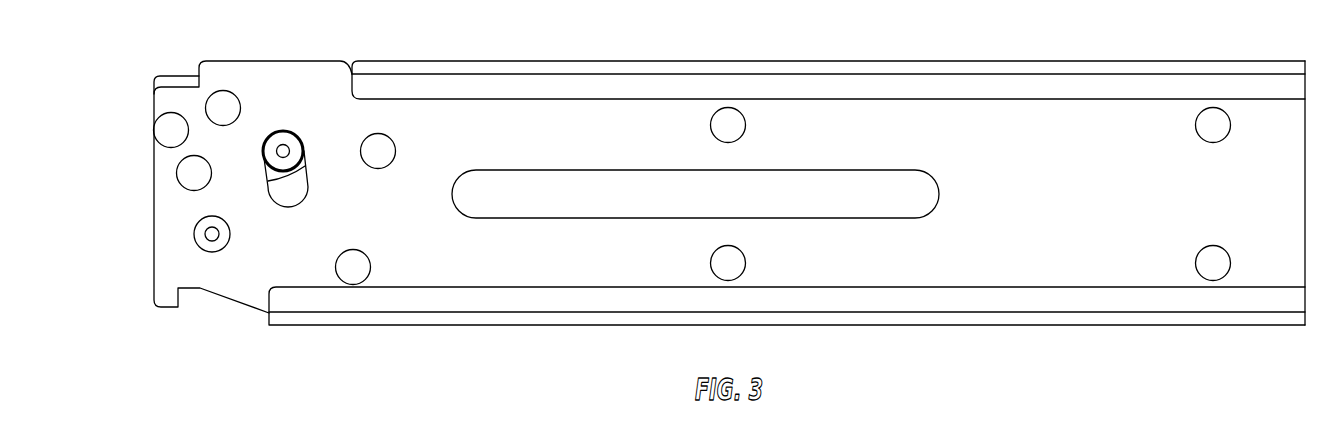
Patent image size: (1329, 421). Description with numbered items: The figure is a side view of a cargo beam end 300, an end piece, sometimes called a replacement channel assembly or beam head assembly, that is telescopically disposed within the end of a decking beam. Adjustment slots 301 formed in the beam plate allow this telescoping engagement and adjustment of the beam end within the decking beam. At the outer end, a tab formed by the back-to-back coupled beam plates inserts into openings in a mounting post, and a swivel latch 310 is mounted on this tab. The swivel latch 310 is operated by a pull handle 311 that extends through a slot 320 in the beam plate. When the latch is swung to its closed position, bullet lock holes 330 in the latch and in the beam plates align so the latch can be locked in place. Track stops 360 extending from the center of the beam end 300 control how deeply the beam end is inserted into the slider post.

The cargo beam end 300 is at (602, 325).
The adjustment slots 301 is at (823, 201).
The swivel latch 310 is at (180, 75).
The pull handle 311 is at (282, 131).
The slot 320 is at (292, 197).
The bullet lock holes 330 is at (224, 90).
The track stops 360 is at (218, 250).